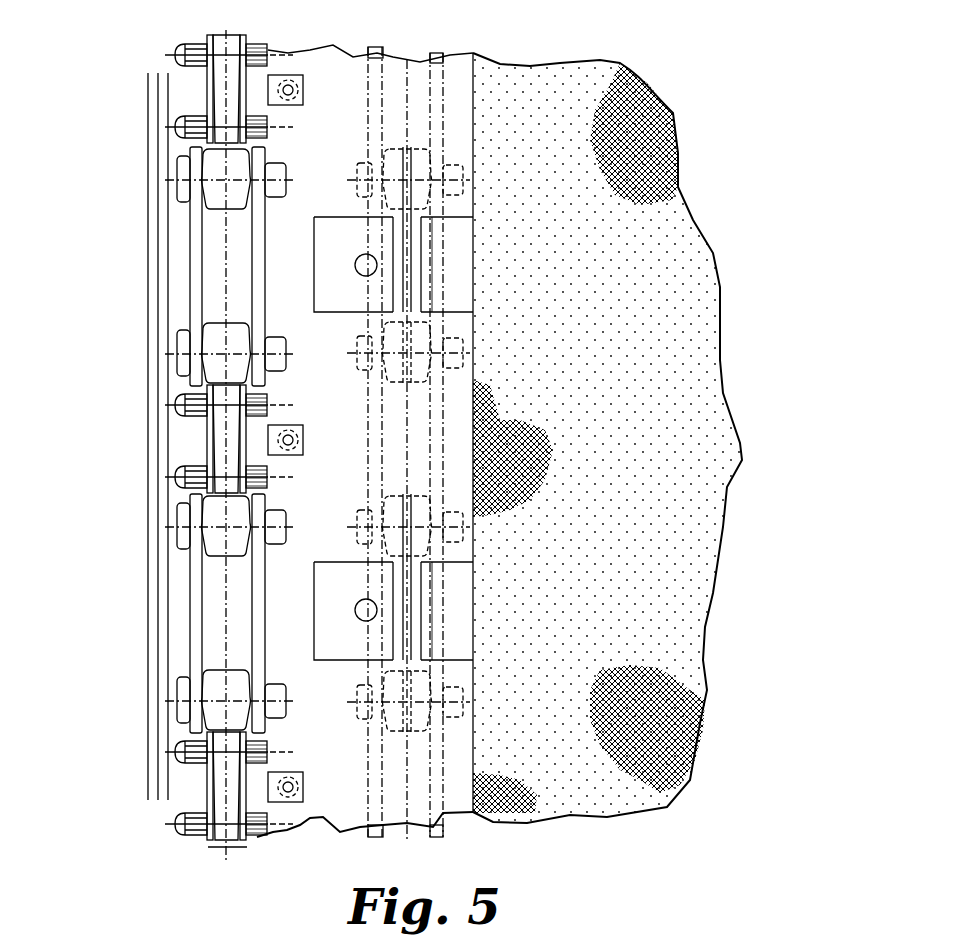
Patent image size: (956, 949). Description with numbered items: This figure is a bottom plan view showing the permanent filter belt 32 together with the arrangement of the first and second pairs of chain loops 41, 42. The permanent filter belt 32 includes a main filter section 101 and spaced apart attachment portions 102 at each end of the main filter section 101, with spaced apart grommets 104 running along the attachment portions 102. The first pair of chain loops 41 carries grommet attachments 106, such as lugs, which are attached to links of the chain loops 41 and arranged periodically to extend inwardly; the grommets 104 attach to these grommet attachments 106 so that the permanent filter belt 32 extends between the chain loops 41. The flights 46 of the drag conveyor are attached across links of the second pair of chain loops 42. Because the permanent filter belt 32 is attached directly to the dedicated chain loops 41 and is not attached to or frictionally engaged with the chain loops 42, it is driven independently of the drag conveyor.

The permanent filter belt 32 is at (717, 95).
The first pair of chain loops 41 is at (213, 712).
The second pair of chain loops 42 is at (418, 160).
The flights 46 is at (332, 245).
The main filter section 101 is at (707, 327).
The attachment portions 102 is at (353, 68).
The grommets 104 is at (296, 88).
The grommet attachments 106 is at (296, 104).